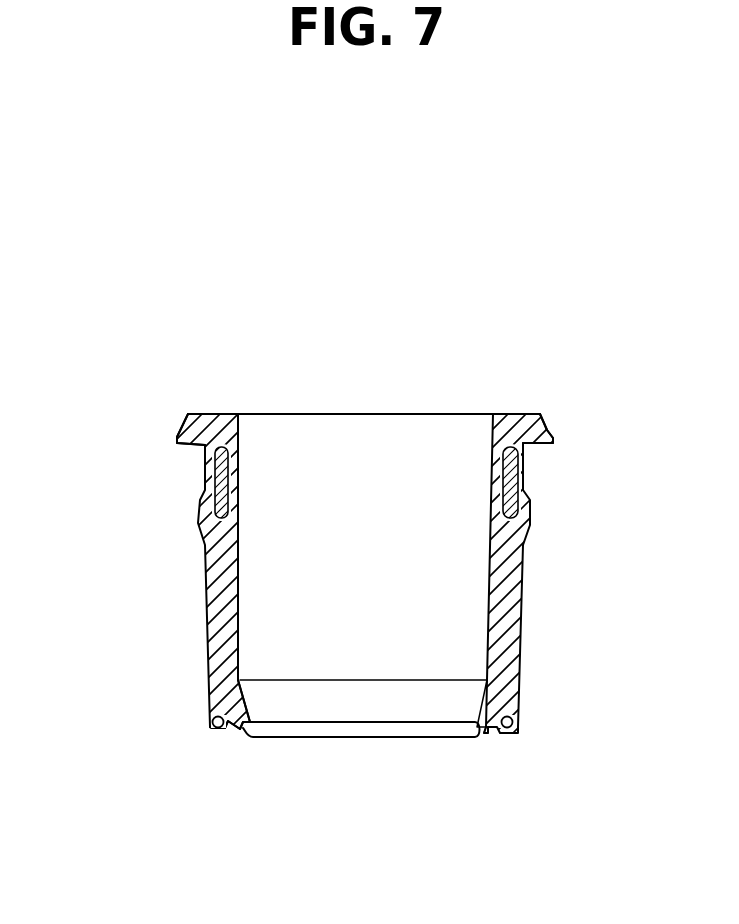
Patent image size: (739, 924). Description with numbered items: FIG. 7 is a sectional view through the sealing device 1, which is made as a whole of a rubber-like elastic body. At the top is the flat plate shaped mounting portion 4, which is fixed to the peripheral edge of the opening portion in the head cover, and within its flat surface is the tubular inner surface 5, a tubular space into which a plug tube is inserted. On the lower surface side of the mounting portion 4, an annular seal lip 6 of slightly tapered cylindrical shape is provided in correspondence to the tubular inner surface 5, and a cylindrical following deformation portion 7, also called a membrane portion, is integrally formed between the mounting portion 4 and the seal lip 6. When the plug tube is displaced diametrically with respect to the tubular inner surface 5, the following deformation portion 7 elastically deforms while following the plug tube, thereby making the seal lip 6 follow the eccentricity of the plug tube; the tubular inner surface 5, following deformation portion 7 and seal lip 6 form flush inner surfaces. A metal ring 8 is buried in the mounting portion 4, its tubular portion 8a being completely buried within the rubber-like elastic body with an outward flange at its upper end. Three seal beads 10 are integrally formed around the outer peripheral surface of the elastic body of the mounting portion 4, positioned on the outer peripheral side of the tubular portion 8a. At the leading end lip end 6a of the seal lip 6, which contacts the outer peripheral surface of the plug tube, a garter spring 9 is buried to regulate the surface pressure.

The sealing device 1 is at (168, 376).
The mounting portion 4 is at (510, 414).
The tubular inner surface 5 is at (260, 414).
The seal lip 6 is at (227, 697).
The lip end 6a is at (243, 727).
The following deformation portion 7 is at (217, 610).
The metal ring 8 is at (207, 453).
The tubular portion 8a is at (222, 488).
The garter spring 9 is at (213, 730).
The seal bead 10 is at (527, 483).